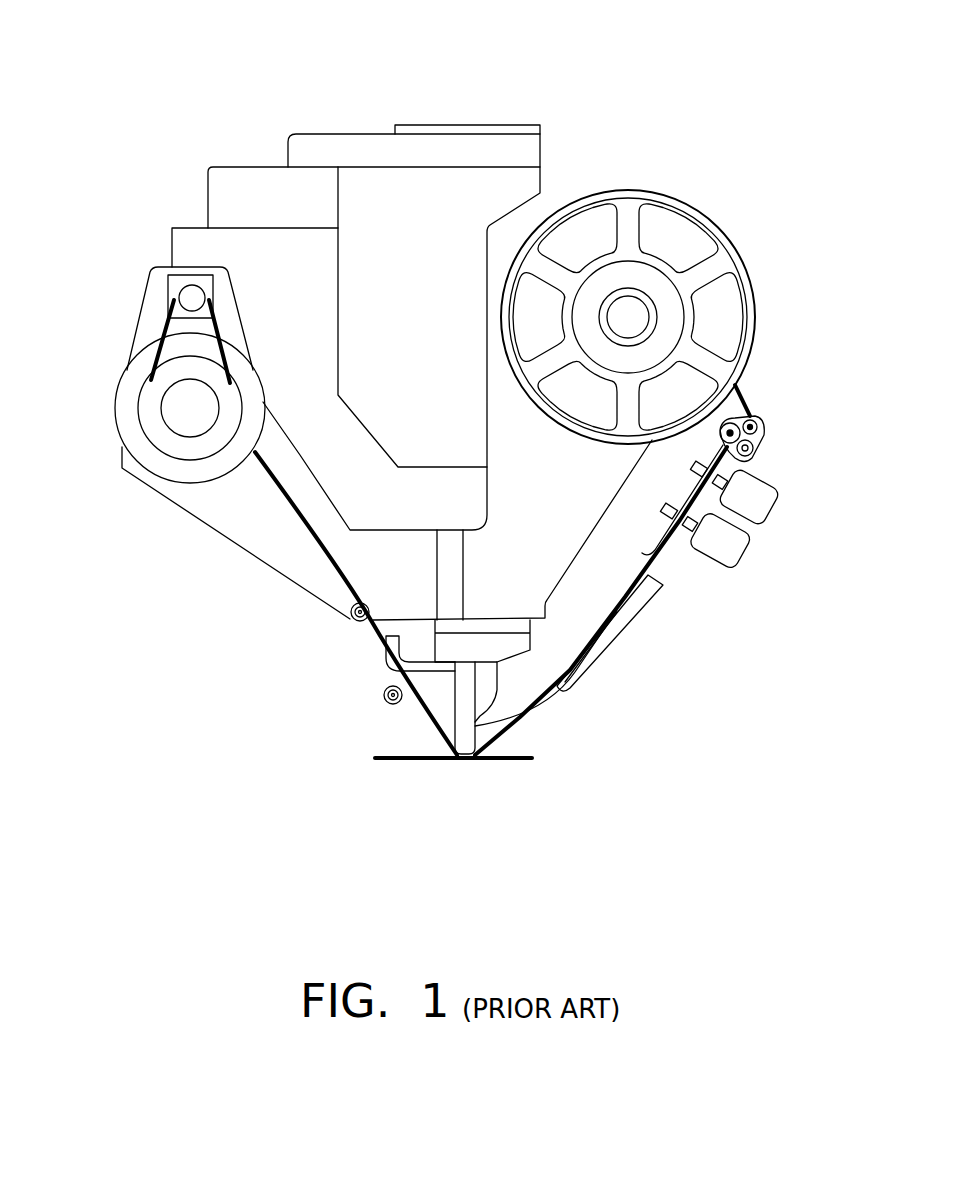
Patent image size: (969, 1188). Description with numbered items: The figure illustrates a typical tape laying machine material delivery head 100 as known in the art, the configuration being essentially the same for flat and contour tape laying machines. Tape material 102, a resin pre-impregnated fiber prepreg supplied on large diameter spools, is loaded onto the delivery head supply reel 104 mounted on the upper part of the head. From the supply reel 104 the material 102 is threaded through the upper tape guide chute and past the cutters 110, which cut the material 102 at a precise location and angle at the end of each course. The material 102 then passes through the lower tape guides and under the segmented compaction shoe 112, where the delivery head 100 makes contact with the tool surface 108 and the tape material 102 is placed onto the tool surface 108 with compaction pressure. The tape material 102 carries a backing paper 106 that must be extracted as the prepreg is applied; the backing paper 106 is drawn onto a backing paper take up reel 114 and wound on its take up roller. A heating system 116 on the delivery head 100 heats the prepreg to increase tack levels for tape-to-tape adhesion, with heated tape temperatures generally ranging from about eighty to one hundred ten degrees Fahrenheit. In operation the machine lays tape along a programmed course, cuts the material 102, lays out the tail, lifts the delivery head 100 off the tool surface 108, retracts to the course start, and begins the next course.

The tape laying machine material delivery head 100 is at (493, 56).
The tape material 102 is at (752, 412).
The delivery head supply reel 104 is at (625, 212).
The backing paper 106 is at (292, 500).
The tool surface 108 is at (513, 756).
The cutters 110 is at (760, 512).
The segmented compaction shoe 112 is at (450, 733).
The backing paper take up reel 114 is at (125, 400).
The heating system 116 is at (617, 652).